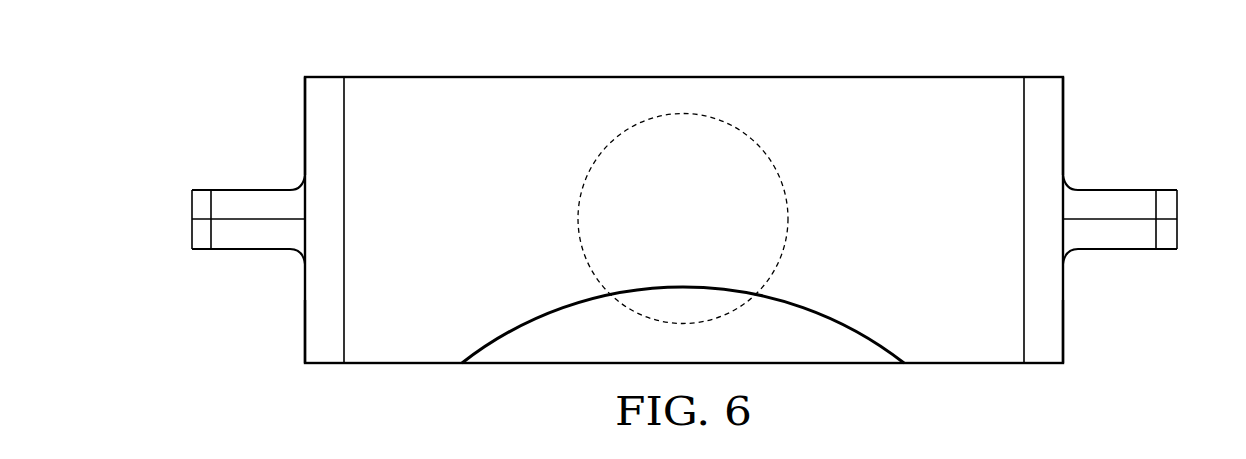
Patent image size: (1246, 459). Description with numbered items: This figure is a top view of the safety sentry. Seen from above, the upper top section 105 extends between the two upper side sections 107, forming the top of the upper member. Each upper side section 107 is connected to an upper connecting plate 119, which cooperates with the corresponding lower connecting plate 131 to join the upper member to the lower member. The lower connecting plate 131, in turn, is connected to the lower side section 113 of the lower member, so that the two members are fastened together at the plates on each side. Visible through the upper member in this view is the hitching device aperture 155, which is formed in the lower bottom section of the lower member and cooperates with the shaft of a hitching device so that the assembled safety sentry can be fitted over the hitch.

The upper top section 105 is at (899, 88).
The upper side sections 107 is at (305, 131).
The lower side section 113 is at (305, 305).
The upper connecting plate 119 is at (200, 189).
The lower connecting plate 131 is at (200, 251).
The hitching device aperture 155 is at (620, 148).